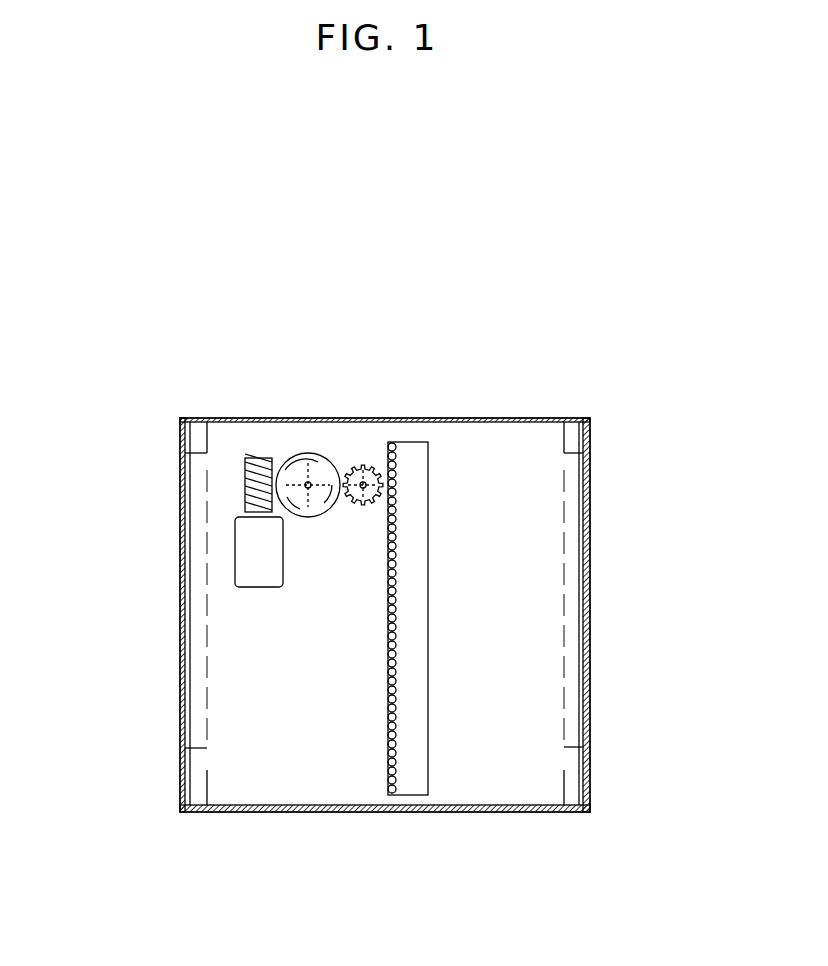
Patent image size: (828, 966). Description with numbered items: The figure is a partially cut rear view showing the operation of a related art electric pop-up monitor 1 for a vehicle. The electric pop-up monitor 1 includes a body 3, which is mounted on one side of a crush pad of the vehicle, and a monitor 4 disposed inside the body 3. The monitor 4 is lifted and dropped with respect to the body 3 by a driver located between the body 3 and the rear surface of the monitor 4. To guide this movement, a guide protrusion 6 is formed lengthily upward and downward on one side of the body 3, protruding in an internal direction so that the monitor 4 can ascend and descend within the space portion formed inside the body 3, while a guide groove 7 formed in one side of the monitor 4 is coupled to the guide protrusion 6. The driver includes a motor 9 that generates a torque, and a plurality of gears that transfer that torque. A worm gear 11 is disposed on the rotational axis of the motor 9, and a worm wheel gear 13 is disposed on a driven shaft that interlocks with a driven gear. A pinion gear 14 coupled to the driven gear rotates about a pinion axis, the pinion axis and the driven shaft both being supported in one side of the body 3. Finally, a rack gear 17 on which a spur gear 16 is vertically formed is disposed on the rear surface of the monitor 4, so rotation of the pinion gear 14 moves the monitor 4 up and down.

The electric pop-up monitor 1 is at (502, 226).
The body 3 is at (590, 418).
The monitor 4 is at (517, 780).
The guide protrusion 6 is at (592, 527).
The guide groove 7 is at (198, 795).
The motor 9 is at (255, 547).
The worm gear 11 is at (258, 458).
The worm wheel gear 13 is at (305, 470).
The pinion gear 14 is at (363, 464).
The spur gear 16 is at (388, 758).
The rack gear 17 is at (415, 778).